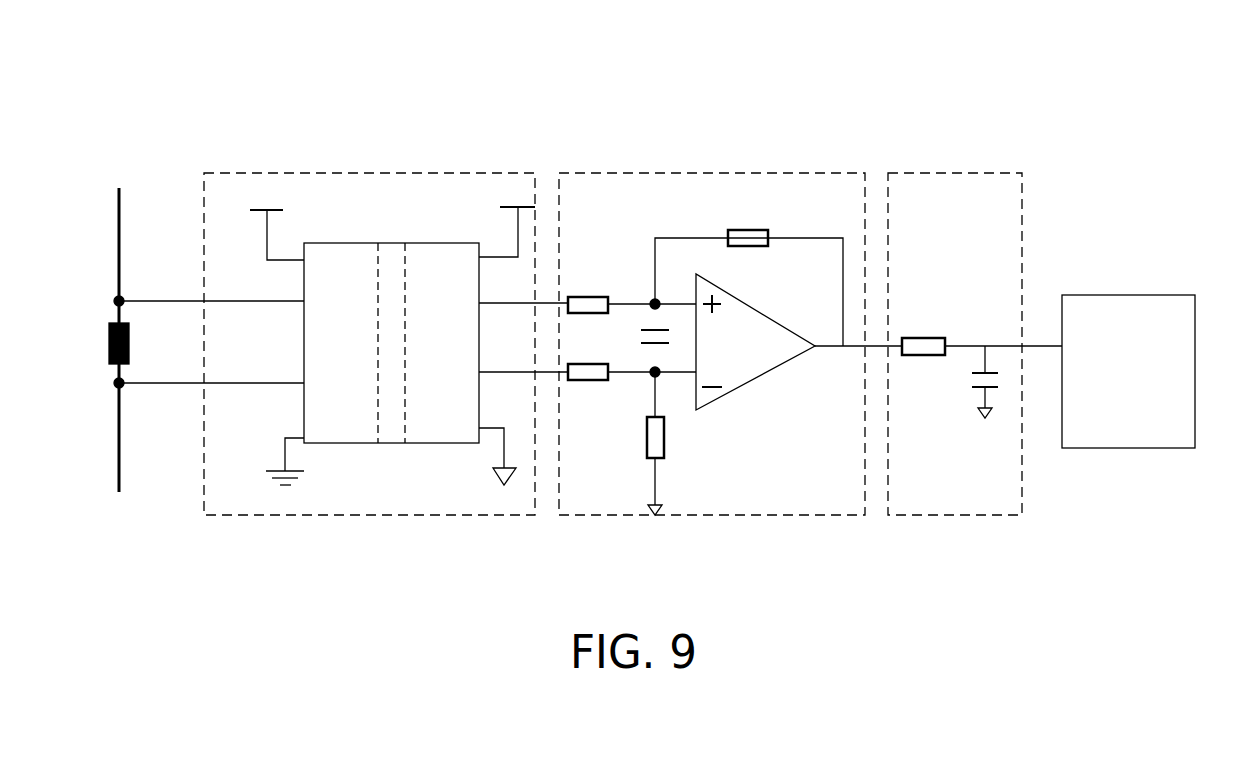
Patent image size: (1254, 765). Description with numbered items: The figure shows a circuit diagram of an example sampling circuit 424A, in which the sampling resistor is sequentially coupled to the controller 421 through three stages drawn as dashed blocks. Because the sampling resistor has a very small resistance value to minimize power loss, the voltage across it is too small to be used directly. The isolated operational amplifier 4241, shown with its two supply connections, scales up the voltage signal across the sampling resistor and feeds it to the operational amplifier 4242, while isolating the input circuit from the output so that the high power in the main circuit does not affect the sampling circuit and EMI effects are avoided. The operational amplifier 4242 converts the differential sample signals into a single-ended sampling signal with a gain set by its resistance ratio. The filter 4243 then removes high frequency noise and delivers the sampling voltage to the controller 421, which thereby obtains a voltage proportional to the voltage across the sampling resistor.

The sampling circuit 424A is at (637, 47).
The isolated operational amplifier 4241 is at (392, 173).
The operational amplifier 4242 is at (693, 173).
The filter 4243 is at (960, 173).
The controller 421 is at (1109, 401).